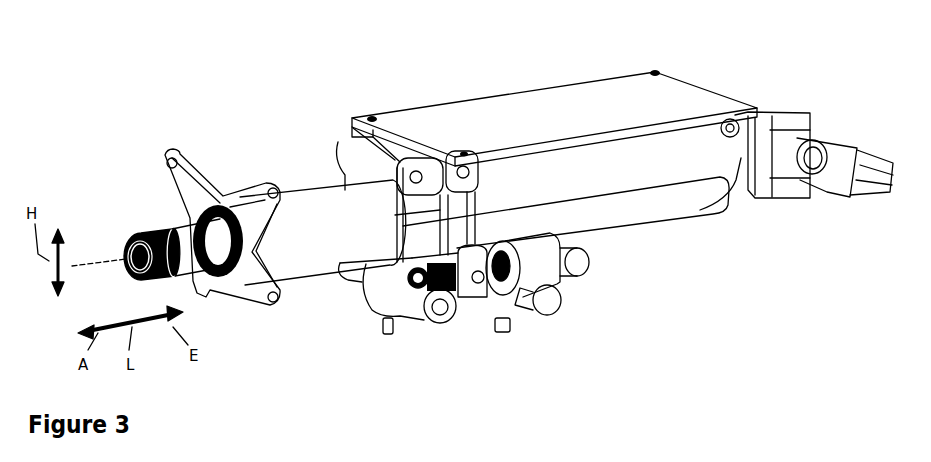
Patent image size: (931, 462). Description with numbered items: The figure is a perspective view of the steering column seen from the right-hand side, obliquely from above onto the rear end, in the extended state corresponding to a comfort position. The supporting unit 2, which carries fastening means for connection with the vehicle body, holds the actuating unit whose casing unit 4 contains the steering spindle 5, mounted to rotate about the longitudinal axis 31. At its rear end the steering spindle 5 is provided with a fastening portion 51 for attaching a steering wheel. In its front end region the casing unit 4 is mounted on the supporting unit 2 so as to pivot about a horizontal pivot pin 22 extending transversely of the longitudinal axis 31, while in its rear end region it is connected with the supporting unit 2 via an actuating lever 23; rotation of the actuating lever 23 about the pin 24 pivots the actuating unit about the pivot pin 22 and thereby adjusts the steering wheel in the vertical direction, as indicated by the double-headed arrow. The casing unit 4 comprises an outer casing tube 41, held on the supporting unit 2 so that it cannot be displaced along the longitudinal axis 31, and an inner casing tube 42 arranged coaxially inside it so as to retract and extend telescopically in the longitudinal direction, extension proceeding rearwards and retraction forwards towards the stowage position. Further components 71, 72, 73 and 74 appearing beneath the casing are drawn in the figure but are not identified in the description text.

The supporting unit 2 is at (570, 105).
The casing unit 4 is at (542, 206).
The steering spindle 5 is at (183, 230).
The pivot pin 22 is at (731, 118).
The actuating lever 23 is at (427, 175).
The pin 24 is at (465, 165).
The longitudinal axis 31 is at (146, 217).
The outer casing tube 41 is at (637, 200).
The inner casing tube 42 is at (315, 207).
The fastening portion 51 is at (148, 230).
The locking bushing 71 is at (510, 288).
The clamp pin 72 is at (445, 303).
The clamp bracket 73 is at (475, 300).
The actuating knob 74 is at (547, 300).